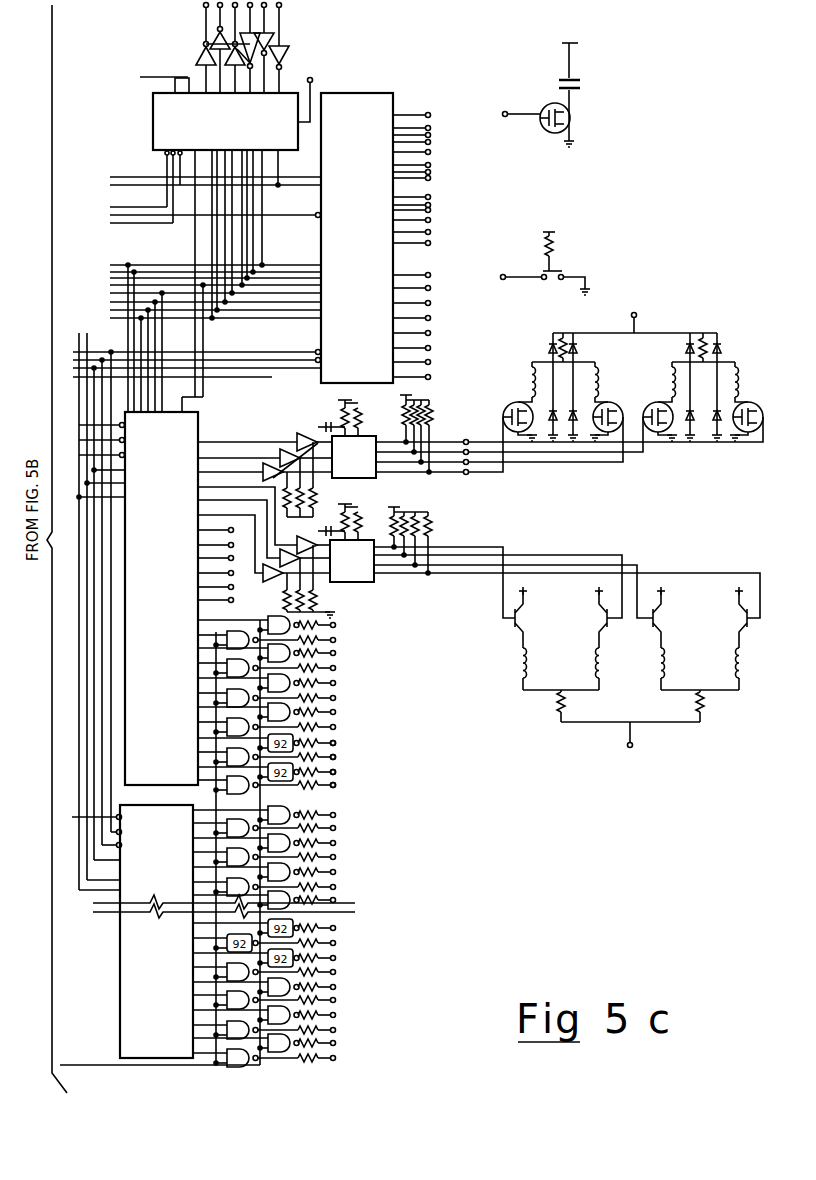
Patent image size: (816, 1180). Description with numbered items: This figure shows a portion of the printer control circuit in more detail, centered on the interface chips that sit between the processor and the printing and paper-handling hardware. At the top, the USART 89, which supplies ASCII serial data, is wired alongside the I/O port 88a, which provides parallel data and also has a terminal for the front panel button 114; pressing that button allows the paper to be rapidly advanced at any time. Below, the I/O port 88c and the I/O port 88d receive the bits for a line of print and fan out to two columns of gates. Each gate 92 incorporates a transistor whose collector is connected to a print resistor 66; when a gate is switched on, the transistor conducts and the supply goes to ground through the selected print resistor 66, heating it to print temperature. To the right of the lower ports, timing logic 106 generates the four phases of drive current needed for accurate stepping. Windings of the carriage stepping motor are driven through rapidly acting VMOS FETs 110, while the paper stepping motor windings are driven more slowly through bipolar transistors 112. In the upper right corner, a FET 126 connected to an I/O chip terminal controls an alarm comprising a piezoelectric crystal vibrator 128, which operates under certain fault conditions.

The USART 89 is at (226, 79).
The I/O port 88a is at (376, 238).
The I/O port 88c is at (161, 598).
The I/O port 88d is at (156, 931).
The timing logic 106 is at (353, 509).
The gate 92 is at (264, 850).
The print resistor 66 is at (338, 745).
The VMOS FET 110 is at (520, 401).
The bipolar transistor 112 is at (600, 628).
The front panel button 114 is at (562, 268).
The FET 126 is at (542, 129).
The piezoelectric crystal vibrator 128 is at (585, 83).